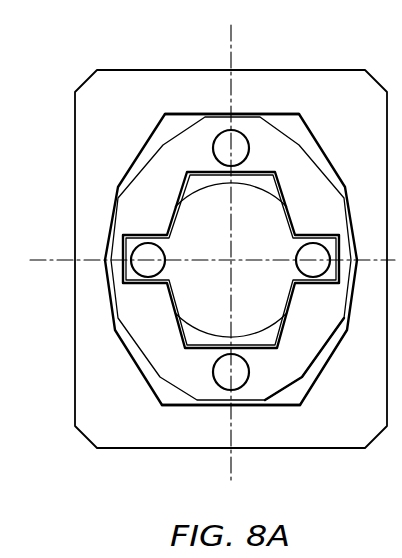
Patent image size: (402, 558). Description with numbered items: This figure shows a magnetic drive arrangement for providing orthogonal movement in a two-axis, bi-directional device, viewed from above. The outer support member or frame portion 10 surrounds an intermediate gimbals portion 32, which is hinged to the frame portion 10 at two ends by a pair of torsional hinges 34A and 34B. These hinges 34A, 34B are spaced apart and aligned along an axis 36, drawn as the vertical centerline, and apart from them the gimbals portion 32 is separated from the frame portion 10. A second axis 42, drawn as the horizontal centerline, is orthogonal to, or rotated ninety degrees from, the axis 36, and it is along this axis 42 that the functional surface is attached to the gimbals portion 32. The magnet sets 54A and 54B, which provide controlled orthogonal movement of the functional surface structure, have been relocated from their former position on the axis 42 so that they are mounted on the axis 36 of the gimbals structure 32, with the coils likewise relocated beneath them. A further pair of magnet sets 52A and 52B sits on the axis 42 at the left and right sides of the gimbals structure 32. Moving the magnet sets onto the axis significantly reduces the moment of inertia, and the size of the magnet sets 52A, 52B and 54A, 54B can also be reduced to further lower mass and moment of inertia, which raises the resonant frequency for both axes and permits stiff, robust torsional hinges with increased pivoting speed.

The support member or frame portion 10 is at (332, 71).
The intermediate gimbals portion 32 is at (157, 352).
The torsional hinge 34A is at (215, 406).
The torsional hinge 34B is at (238, 110).
The axis 36 is at (229, 51).
The axis 42 is at (47, 259).
The magnet set 52A is at (150, 243).
The magnet set 52B is at (308, 250).
The magnet set 54A is at (249, 372).
The magnet set 54B is at (218, 147).